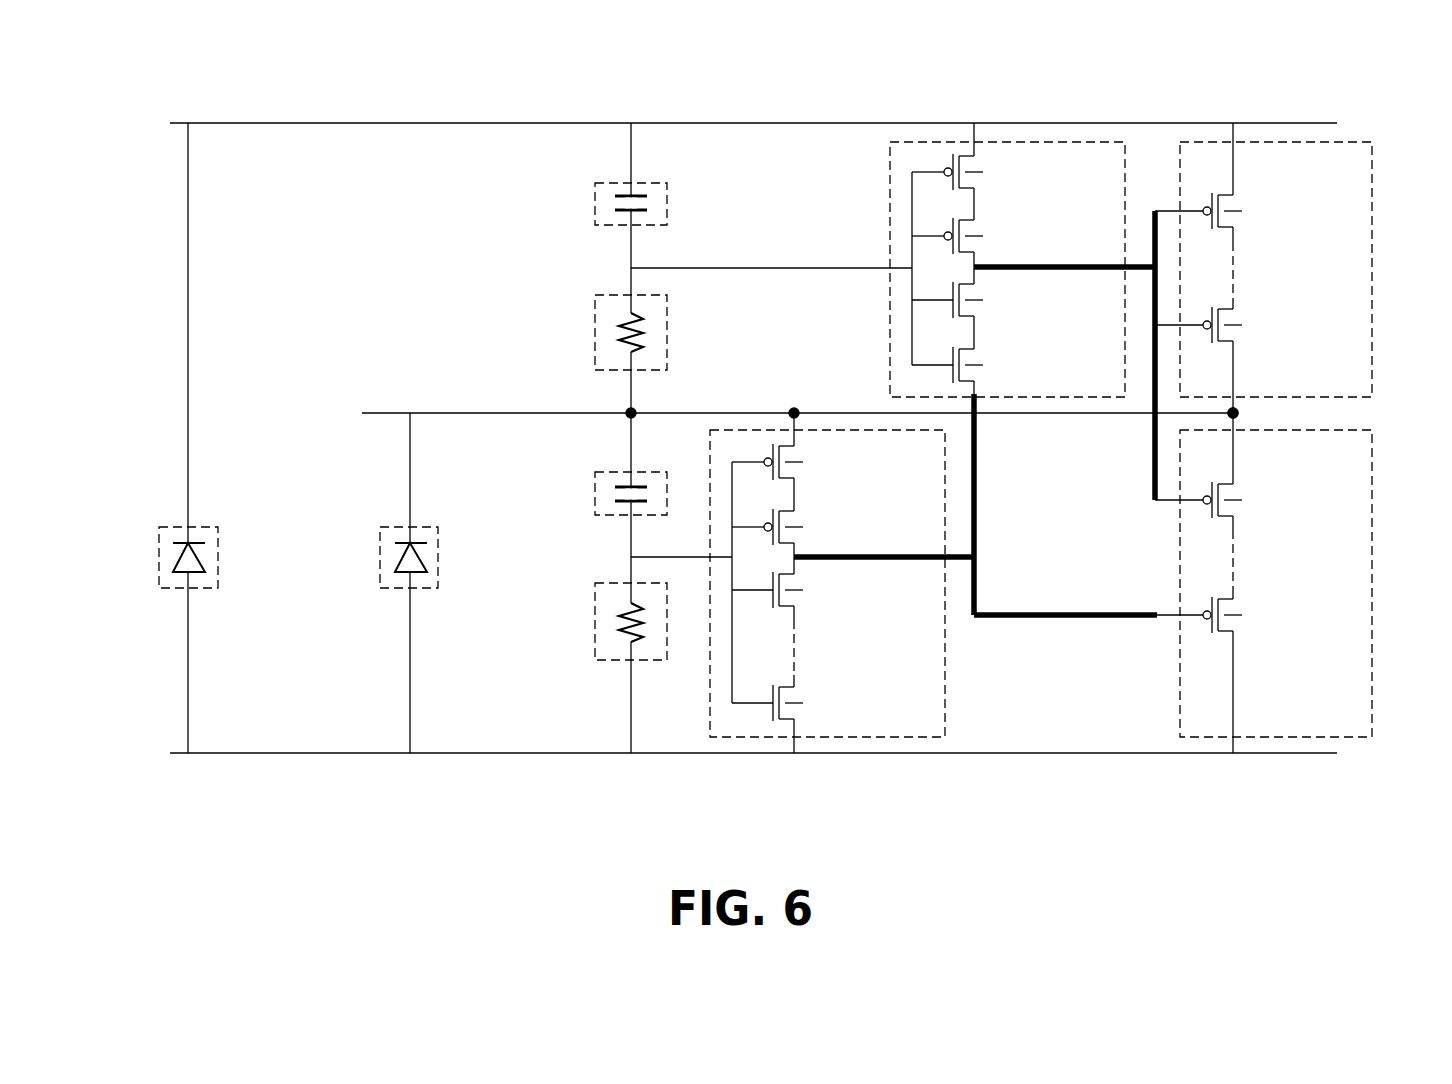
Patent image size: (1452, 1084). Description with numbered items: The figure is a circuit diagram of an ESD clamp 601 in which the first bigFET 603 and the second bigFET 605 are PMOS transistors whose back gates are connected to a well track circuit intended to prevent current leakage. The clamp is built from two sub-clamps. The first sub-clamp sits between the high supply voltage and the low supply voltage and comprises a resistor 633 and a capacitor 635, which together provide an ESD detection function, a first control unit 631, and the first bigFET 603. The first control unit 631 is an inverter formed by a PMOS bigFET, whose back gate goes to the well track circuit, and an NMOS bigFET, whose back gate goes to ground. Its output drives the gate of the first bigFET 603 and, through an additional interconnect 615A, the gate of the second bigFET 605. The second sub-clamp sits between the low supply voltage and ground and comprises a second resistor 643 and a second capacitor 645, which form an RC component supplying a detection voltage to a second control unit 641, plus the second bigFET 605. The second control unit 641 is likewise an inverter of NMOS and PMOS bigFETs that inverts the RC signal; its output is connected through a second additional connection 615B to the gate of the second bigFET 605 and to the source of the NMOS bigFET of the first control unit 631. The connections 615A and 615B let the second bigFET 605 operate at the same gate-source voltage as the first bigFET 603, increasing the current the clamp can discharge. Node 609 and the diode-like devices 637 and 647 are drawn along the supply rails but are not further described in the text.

The ESD clamp 601 is at (1367, 840).
The first bigFET 603 is at (1373, 260).
The second bigFET 605 is at (1373, 555).
The output node 609 is at (1238, 413).
The additional interconnect 615A is at (1155, 440).
The second additional connection 615B is at (977, 577).
The first control unit 631 is at (1090, 142).
The resistor 633 is at (595, 355).
The capacitor 635 is at (595, 201).
The first diode 637 is at (159, 555).
The second control unit 641 is at (894, 740).
The second resistor 643 is at (595, 645).
The second capacitor 645 is at (595, 491).
The second diode 647 is at (380, 555).